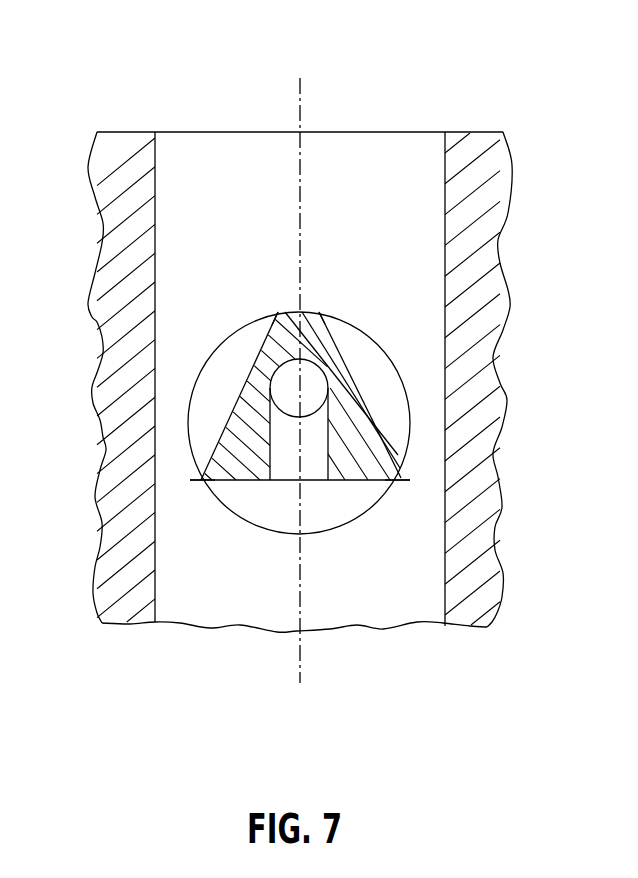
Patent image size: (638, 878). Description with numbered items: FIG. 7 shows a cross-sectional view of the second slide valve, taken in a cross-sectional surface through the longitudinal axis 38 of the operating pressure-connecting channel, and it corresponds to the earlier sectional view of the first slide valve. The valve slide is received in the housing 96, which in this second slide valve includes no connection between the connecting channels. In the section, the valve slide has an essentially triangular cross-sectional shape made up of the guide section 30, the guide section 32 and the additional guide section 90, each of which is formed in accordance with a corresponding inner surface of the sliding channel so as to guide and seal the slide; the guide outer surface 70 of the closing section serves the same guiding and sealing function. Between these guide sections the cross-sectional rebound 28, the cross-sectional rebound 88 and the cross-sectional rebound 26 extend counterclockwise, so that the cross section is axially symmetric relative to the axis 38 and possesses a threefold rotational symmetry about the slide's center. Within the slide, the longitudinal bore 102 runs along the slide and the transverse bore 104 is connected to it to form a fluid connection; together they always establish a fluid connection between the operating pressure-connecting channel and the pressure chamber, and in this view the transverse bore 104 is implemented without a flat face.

The longitudinal axis of operating pressure-connecting channel 38 is at (302, 108).
The housing 96 is at (470, 150).
The guide outer surface 70 is at (349, 319).
The guide section 32 is at (290, 305).
The cross-sectional rebound 88 is at (258, 354).
The cross-sectional rebound 28 is at (343, 352).
The longitudinal bore 102 is at (318, 385).
The transverse bore 104 is at (313, 467).
The cross-sectional rebound 26 is at (255, 488).
The additional guide section 90 is at (193, 477).
The guide section 30 is at (405, 478).